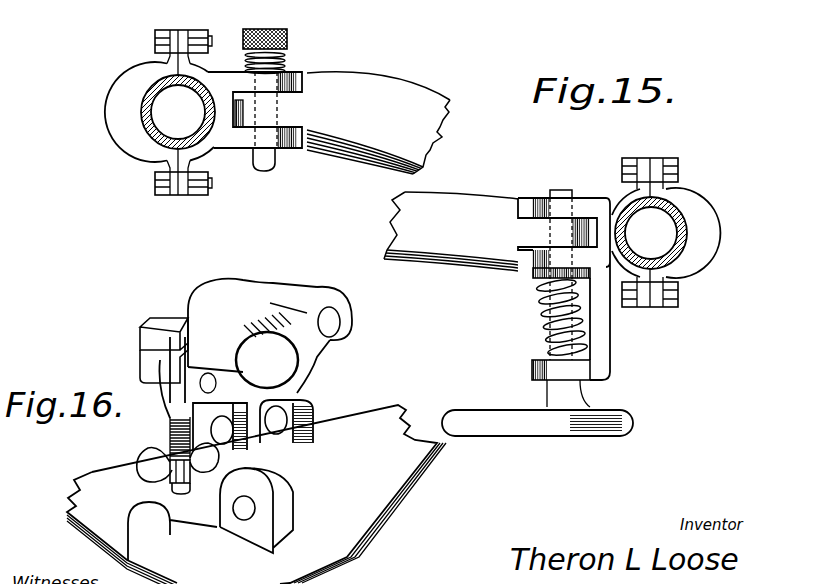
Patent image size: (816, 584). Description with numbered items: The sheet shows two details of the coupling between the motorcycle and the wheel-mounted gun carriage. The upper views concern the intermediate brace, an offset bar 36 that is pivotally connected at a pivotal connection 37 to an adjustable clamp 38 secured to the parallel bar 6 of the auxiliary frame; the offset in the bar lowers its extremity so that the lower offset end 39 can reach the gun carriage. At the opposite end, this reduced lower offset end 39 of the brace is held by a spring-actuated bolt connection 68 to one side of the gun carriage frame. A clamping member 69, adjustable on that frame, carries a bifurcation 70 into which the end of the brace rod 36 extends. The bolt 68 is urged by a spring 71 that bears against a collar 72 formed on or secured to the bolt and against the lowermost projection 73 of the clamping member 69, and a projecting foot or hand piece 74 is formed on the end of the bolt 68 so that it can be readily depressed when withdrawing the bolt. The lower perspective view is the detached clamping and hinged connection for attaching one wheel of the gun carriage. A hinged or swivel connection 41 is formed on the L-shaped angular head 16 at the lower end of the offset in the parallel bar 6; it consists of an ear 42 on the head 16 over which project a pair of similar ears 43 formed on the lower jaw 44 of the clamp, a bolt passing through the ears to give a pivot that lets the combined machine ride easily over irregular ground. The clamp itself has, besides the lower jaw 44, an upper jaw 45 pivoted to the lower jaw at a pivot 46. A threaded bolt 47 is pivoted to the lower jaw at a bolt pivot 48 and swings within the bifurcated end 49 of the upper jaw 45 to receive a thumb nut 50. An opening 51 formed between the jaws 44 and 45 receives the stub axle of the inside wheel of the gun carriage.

In FIG. 15, the adjustable clamp 38 is at (144, 85).
In FIG. 15, the parallel bar 6 is at (152, 133).
In FIG. 15, the pivotal connection 37 is at (278, 82).
In FIG. 15, the offset bar 36 is at (373, 90).
In FIG. 15, the lower offset end 39 is at (480, 190).
In FIG. 15, the bifurcation 70 is at (578, 205).
In FIG. 15, the clamping member 69 is at (686, 268).
In FIG. 15, the collar 72 is at (535, 277).
In FIG. 15, the spring 71 is at (543, 343).
In FIG. 15, the bolt connection 68 is at (590, 333).
In FIG. 15, the lowermost projection 73 is at (567, 371).
In FIG. 15, the projecting foot or hand piece 74 is at (484, 408).
In FIG. 16, the upper jaw 45 is at (237, 293).
In FIG. 16, the opening 51 is at (267, 360).
In FIG. 16, the pivot of upper jaw 46 is at (342, 322).
In FIG. 16, the lower jaw 44 is at (303, 367).
In FIG. 16, the hinged or swivel connection 41 is at (287, 403).
In FIG. 16, the ears 43 is at (265, 448).
In FIG. 16, the bifurcated end 49 is at (153, 320).
In FIG. 16, the bolt pivot 48 is at (187, 407).
In FIG. 16, the thumb nut 50 is at (187, 494).
In FIG. 16, the threaded bolt 47 is at (141, 443).
In FIG. 16, the ear 42 is at (274, 488).
In FIG. 16, the L-shaped angular head 16 is at (256, 494).